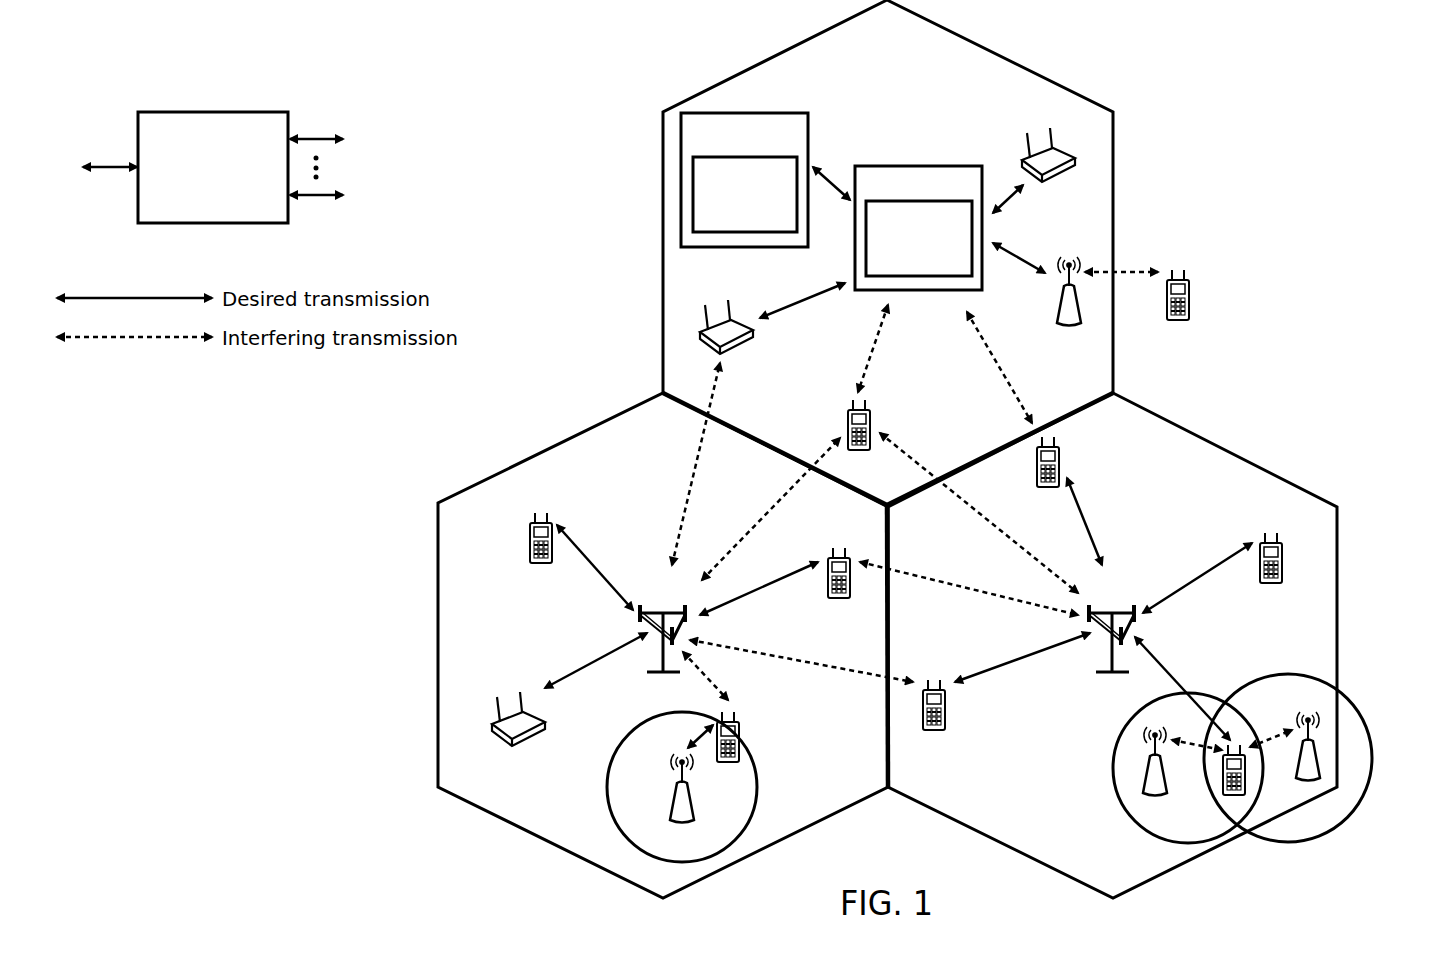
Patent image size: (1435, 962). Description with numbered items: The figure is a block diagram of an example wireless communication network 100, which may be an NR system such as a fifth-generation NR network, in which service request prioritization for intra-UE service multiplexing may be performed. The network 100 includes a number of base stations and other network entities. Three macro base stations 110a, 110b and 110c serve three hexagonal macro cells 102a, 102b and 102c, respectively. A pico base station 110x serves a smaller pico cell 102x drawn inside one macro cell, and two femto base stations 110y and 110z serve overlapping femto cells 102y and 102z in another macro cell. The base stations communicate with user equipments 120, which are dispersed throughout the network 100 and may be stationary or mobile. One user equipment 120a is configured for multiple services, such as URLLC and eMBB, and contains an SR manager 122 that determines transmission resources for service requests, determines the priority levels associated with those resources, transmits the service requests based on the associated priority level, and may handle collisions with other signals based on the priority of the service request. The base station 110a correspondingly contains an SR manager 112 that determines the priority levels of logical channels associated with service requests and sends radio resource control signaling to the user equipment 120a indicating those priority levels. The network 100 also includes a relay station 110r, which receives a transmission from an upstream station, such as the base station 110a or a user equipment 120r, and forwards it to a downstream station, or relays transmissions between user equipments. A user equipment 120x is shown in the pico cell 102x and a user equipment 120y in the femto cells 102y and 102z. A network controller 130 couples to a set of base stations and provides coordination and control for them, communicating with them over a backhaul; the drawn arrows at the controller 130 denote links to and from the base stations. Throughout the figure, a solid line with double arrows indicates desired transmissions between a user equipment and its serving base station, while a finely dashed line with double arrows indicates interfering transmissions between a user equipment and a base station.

The wireless communication network 100 is at (1270, 67).
The macro cell 102a is at (1015, 42).
The macro cell 102b is at (552, 448).
The macro cell 102c is at (1228, 450).
The pico cell 102x is at (631, 733).
The femto cell 102y is at (1122, 735).
The femto cell 102z is at (1288, 673).
The base station 110a is at (886, 204).
The base station 110b is at (660, 612).
The base station 110c is at (1111, 612).
The relay station 110r is at (1059, 312).
The pico base station 110x is at (694, 821).
The femto base station 110y is at (1164, 790).
The femto base station 110z is at (1319, 772).
The SR manager 112 is at (866, 253).
The user equipment 120 is at (1057, 144).
The user equipment 120a is at (715, 158).
The user equipment 120r is at (1190, 303).
The user equipment 120x is at (755, 718).
The user equipment 120y is at (1222, 793).
The SR manager 122 is at (693, 195).
The network controller 130 is at (208, 112).